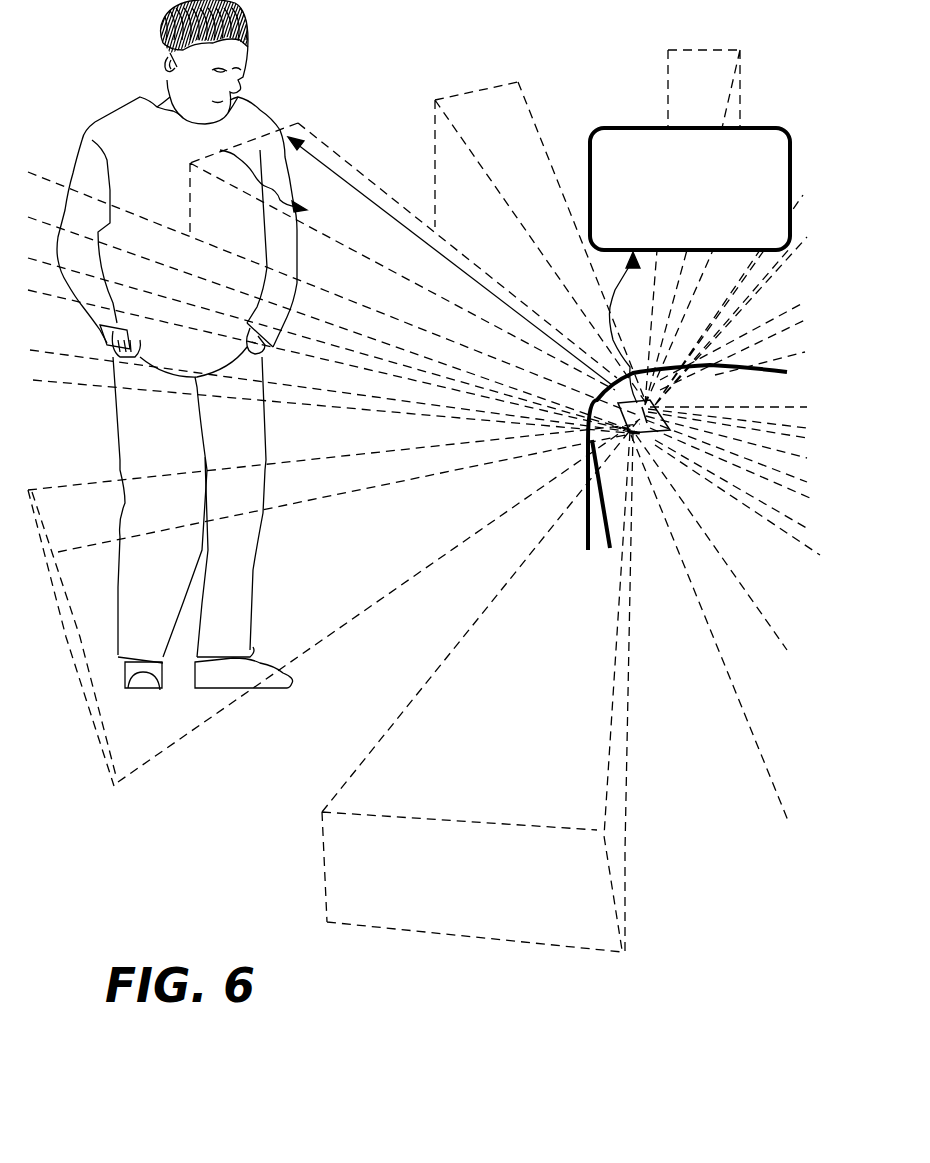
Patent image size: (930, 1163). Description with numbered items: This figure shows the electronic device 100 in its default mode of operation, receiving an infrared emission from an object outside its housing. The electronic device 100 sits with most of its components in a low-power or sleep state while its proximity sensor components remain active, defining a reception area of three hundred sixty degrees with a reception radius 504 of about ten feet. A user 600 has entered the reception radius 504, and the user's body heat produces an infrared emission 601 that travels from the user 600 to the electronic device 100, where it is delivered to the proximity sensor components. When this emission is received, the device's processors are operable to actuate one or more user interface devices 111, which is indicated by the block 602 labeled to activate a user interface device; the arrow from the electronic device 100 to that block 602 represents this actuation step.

The user 600 is at (137, 113).
The infrared emission 601 is at (220, 150).
The reception radius 504 is at (333, 170).
The electronic device 100 is at (633, 432).
The user interface devices 111 is at (615, 185).
The activate user interface device block 602 is at (733, 165).